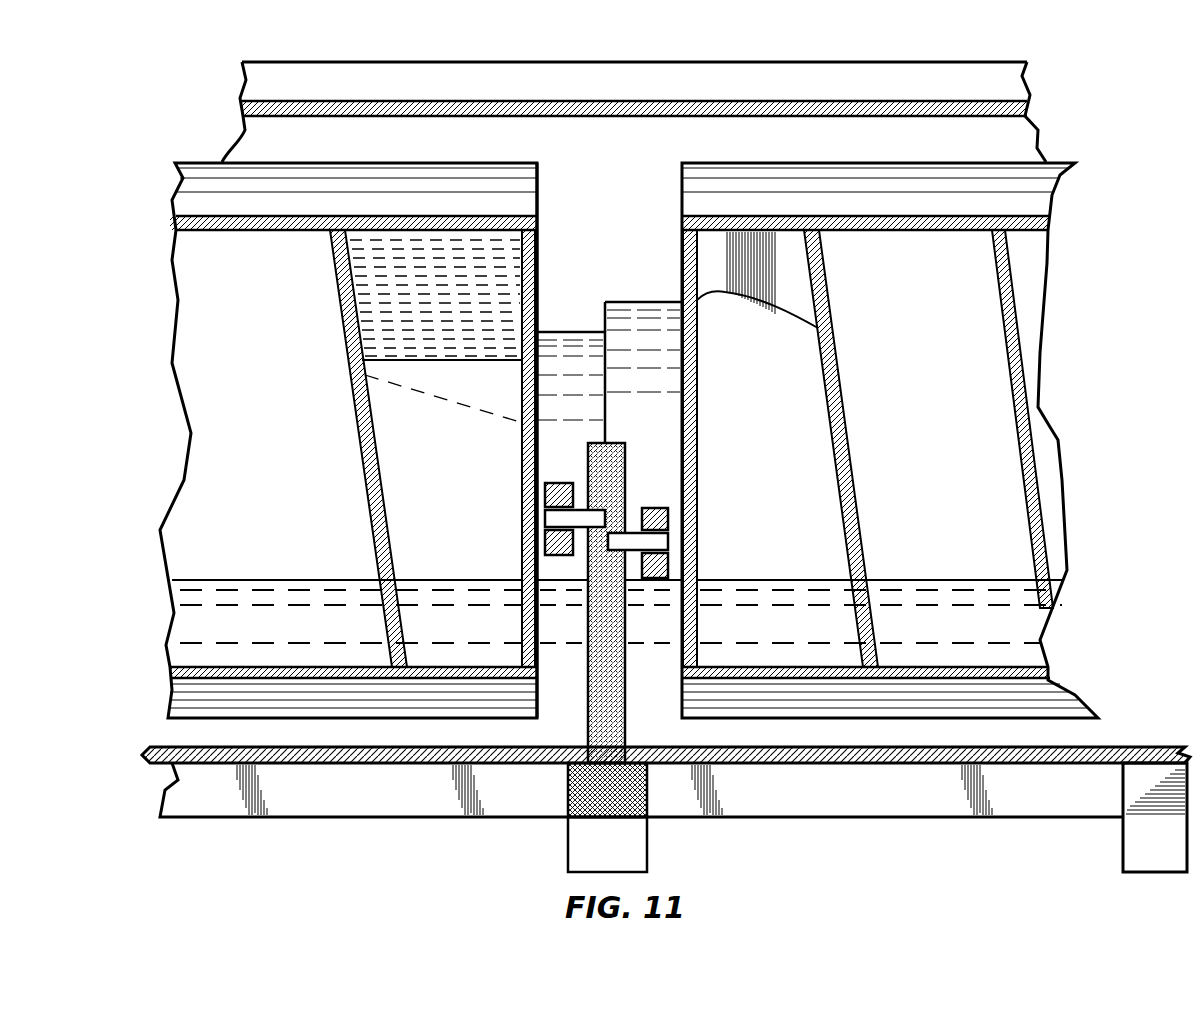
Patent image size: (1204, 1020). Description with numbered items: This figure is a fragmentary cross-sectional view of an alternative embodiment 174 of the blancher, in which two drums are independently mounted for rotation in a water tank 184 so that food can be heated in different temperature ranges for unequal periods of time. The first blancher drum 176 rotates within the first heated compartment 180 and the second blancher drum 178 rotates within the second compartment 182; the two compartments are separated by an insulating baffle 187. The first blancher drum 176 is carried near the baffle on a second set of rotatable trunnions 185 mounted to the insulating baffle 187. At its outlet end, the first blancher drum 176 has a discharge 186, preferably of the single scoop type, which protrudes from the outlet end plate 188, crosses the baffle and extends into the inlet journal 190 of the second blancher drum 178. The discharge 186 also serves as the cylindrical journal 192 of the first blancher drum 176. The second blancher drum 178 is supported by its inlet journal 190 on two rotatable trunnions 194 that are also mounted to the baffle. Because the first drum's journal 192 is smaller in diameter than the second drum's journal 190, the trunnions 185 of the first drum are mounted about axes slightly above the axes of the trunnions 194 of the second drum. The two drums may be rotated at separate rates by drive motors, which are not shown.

The alternative embodiment of the blancher 174 is at (290, 44).
The first blancher drum 176 is at (262, 162).
The second blancher drum 178 is at (992, 162).
The first heated compartment 180 is at (170, 747).
The second compartment 182 is at (1120, 747).
The water tank 184 is at (377, 765).
The rotatable trunnions 185 is at (548, 483).
The discharge 186 is at (460, 360).
The insulating baffle 187 is at (528, 765).
The outlet end plate 188 is at (538, 182).
The inlet journal 190 is at (627, 303).
The cylindrical journal 192 is at (582, 332).
The rotatable trunnions 194 is at (656, 508).